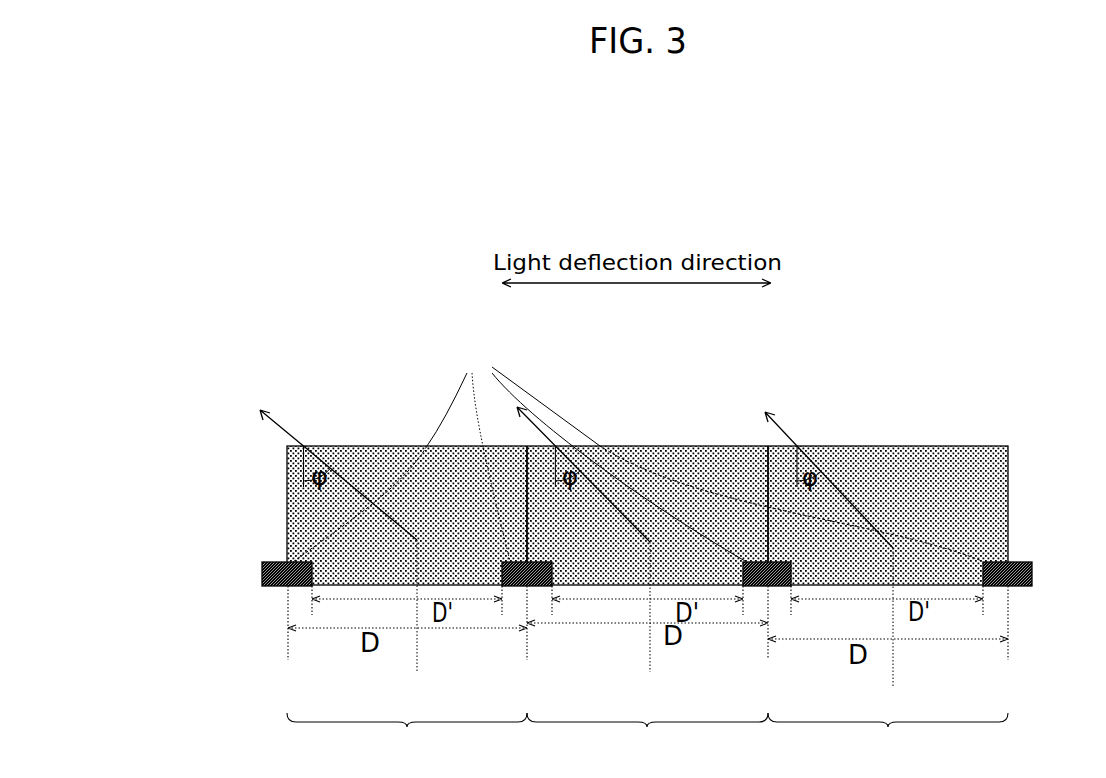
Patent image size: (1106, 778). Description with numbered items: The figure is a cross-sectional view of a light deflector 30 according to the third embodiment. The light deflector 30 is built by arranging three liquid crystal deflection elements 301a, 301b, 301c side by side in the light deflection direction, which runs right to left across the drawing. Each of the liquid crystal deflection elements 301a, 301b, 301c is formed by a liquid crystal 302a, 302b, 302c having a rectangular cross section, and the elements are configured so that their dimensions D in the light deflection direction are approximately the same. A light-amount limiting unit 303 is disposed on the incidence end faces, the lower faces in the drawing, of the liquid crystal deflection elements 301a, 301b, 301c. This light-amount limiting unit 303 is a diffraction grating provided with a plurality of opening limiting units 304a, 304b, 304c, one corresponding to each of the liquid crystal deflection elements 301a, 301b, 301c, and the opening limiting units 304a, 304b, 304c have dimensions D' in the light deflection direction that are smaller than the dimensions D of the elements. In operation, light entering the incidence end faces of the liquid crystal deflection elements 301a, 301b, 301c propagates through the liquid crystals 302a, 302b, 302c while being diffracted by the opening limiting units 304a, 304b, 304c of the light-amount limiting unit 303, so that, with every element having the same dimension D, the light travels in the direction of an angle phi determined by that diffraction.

The light deflector 30 is at (211, 347).
The liquid crystal deflection element 301a is at (407, 738).
The liquid crystal deflection element 301b is at (647, 738).
The liquid crystal deflection element 301c is at (888, 738).
The liquid crystal 302a is at (343, 457).
The liquid crystal 302b is at (713, 480).
The liquid crystal 302c is at (947, 505).
The light-amount limiting unit 303 is at (637, 453).
The opening limiting unit 304a is at (310, 592).
The opening limiting unit 304b is at (588, 573).
The opening limiting unit 304c is at (982, 590).